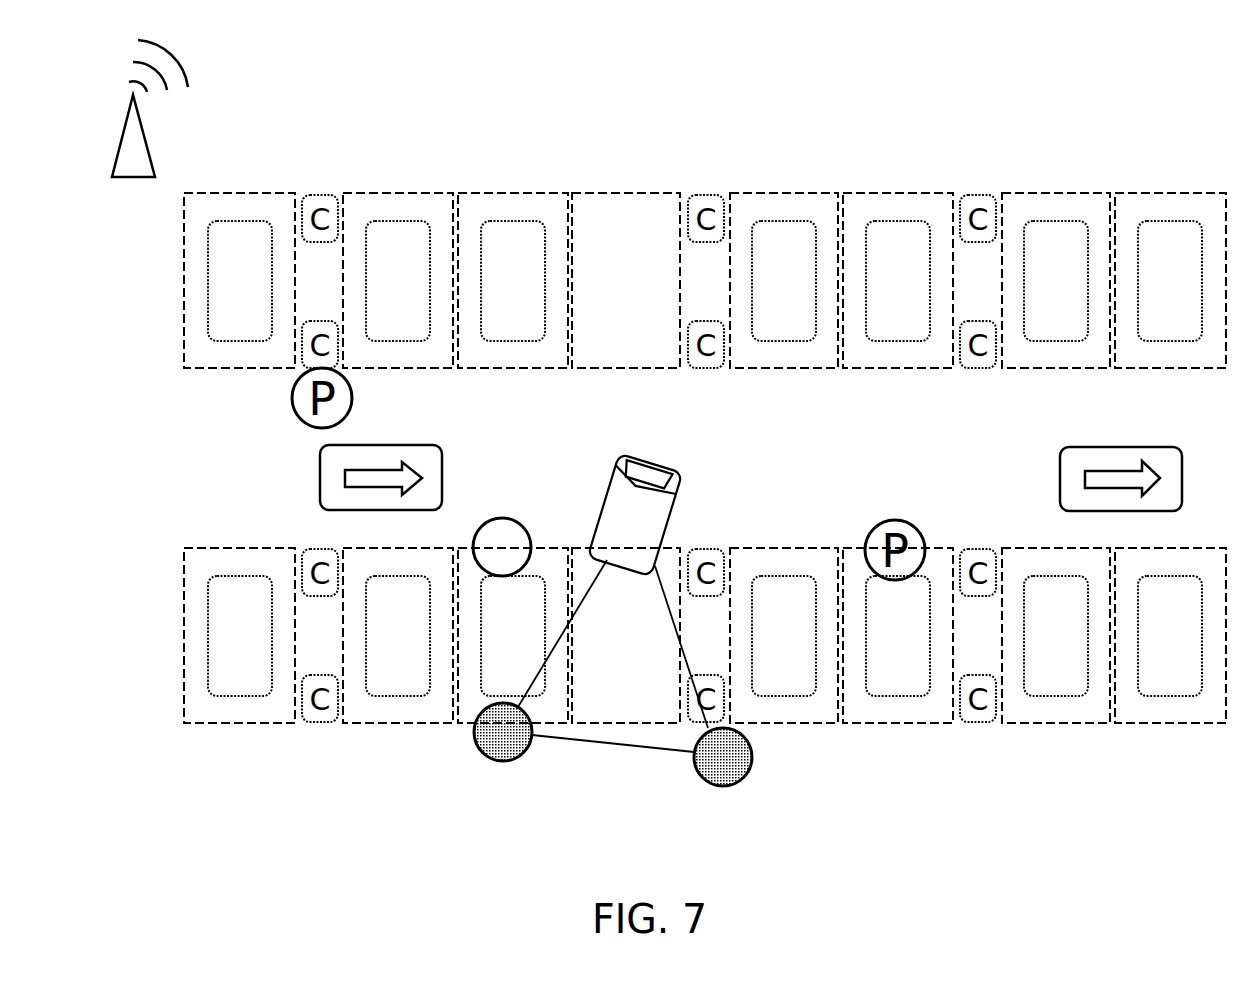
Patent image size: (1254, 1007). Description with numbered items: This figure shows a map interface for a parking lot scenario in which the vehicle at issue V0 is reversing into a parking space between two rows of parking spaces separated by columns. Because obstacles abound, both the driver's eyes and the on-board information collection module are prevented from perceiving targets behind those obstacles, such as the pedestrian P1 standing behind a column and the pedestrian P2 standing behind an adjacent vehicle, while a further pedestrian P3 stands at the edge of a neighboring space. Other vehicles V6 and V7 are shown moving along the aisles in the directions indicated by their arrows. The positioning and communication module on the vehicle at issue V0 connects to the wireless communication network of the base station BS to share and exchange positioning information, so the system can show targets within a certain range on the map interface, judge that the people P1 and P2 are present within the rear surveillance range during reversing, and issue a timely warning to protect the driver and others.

The base station BS is at (150, 155).
The vehicle V6 is at (327, 480).
The vehicle V7 is at (1065, 478).
The pedestrian P3 is at (503, 517).
The vehicle at issue V0 is at (668, 500).
The pedestrian P2 is at (497, 763).
The pedestrian P1 is at (720, 788).